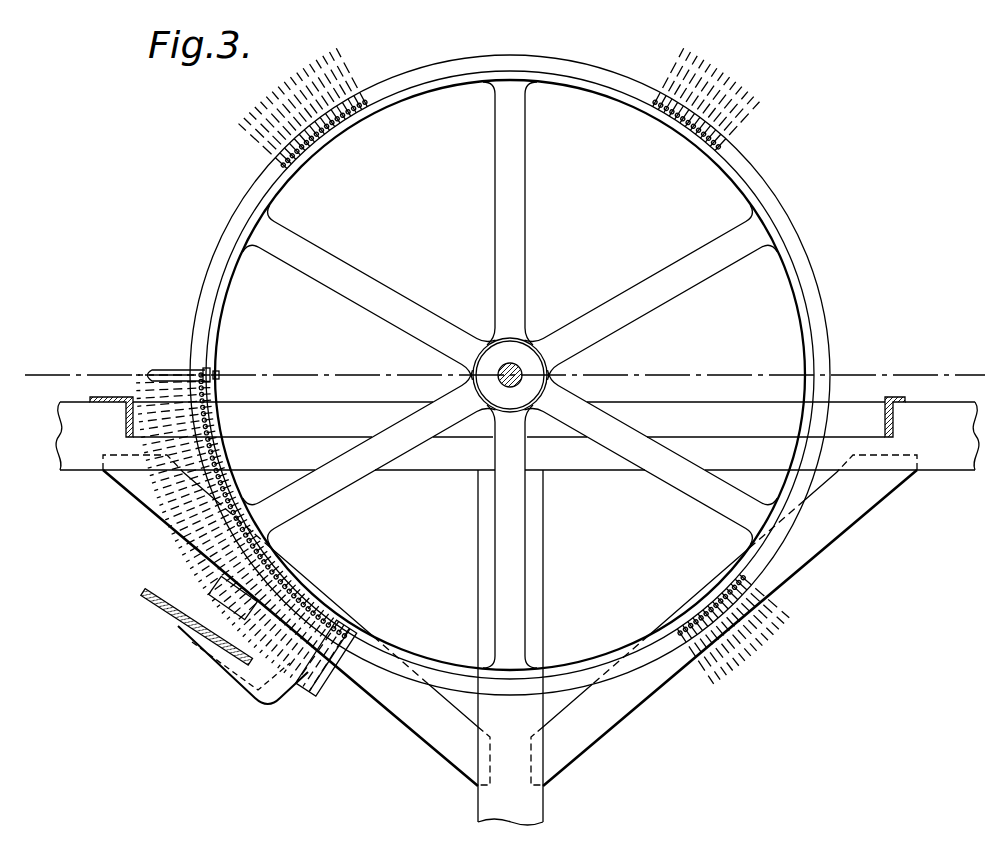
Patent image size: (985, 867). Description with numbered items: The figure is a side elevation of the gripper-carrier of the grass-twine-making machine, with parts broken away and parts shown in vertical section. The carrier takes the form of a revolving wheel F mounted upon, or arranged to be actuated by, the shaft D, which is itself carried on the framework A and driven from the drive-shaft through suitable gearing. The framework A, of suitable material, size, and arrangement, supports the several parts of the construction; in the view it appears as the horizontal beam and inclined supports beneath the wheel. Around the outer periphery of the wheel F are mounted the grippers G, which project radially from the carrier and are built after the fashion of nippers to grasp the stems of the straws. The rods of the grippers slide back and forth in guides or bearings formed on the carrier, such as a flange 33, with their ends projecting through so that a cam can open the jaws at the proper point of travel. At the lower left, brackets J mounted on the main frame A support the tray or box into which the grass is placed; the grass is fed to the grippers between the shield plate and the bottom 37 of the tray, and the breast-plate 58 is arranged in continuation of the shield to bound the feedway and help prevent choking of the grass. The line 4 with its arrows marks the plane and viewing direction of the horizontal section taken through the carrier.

The section line 4 4 is at (60, 343).
The flange 33 is at (788, 226).
The bottom of the tray 37 is at (162, 608).
The breast-plate 58 is at (218, 592).
The framework A is at (860, 503).
The shaft D is at (517, 368).
The revolving wheel F is at (512, 375).
The grippers G is at (733, 93).
The brackets J is at (232, 680).